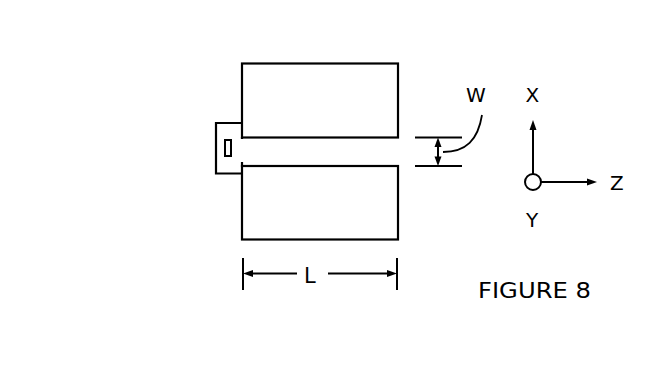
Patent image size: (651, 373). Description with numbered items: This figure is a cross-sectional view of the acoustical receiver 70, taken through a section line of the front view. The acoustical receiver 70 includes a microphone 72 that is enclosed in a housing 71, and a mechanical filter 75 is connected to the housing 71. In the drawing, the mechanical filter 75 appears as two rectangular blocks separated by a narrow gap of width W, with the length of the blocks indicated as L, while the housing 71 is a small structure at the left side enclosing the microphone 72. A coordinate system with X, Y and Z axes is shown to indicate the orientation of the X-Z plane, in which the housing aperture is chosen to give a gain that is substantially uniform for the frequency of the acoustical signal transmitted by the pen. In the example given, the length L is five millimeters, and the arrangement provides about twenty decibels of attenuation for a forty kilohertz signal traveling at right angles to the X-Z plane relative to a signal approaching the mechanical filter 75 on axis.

The acoustical receiver 70 is at (144, 63).
The housing 71 is at (222, 179).
The microphone 72 is at (228, 157).
The mechanical filter 75 is at (357, 78).